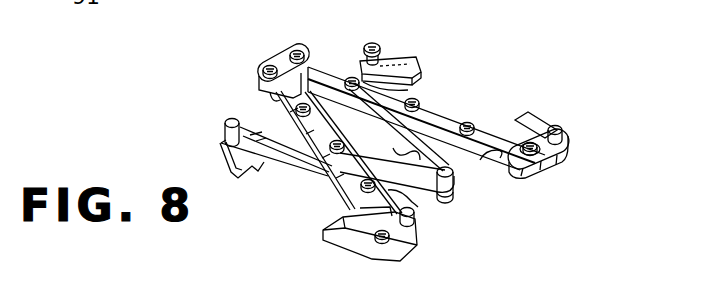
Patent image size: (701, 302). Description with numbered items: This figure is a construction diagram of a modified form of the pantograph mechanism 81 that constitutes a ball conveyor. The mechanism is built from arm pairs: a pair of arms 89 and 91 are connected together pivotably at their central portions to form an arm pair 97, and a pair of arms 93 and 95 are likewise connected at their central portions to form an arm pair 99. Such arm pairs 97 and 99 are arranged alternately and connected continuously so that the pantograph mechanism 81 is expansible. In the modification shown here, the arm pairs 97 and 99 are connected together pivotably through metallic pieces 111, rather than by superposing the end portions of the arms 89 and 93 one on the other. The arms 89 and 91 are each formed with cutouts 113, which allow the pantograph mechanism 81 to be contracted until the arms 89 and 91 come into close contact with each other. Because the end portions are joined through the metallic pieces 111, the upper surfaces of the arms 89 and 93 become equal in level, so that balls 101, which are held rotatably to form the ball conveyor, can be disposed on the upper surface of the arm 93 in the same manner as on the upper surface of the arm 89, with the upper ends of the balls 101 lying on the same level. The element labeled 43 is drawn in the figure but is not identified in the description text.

The bolt 43 is at (372, 43).
The pantograph mechanism 81 is at (434, 65).
The arm 89 is at (507, 138).
The arm 91 is at (408, 90).
The arm 93 is at (343, 170).
The arm 95 is at (276, 148).
The arm pair 97 is at (462, 166).
The arm pair 99 is at (264, 124).
The balls 101 is at (296, 50).
The metallic pieces 111 is at (272, 60).
The cutouts 113 is at (252, 103).